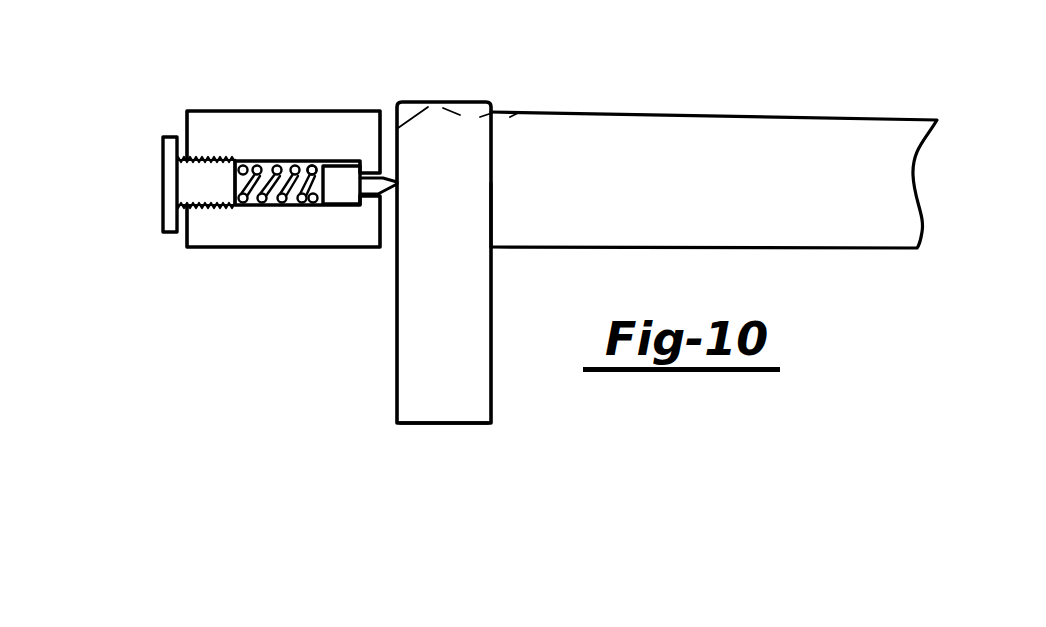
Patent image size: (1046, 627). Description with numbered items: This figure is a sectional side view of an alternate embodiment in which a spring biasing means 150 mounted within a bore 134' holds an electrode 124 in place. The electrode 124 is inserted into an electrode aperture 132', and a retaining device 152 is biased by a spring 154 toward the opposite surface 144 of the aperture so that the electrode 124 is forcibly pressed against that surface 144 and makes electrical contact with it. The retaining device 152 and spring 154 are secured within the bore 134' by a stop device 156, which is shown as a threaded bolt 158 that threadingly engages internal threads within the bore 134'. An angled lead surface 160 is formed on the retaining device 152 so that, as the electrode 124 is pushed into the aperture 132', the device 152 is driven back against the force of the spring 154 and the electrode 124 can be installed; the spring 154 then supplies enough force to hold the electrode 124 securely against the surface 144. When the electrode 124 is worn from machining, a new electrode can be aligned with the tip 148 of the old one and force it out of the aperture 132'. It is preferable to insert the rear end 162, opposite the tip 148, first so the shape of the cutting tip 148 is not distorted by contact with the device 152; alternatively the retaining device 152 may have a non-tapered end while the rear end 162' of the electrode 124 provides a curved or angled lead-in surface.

The electrode 124 is at (418, 384).
The electrode aperture 132' is at (325, 130).
The bore 134' is at (239, 230).
The surface of aperture 144 is at (493, 183).
The tip 148 is at (462, 425).
The spring biasing means 150 is at (261, 164).
The retaining device 152 is at (333, 205).
The spring 154 is at (297, 170).
The stop device 156 is at (173, 184).
The threaded bolt 158 is at (202, 180).
The angled lead surface 160 is at (377, 197).
The rear end 162 is at (688, 146).
The rear end 162' is at (509, 94).